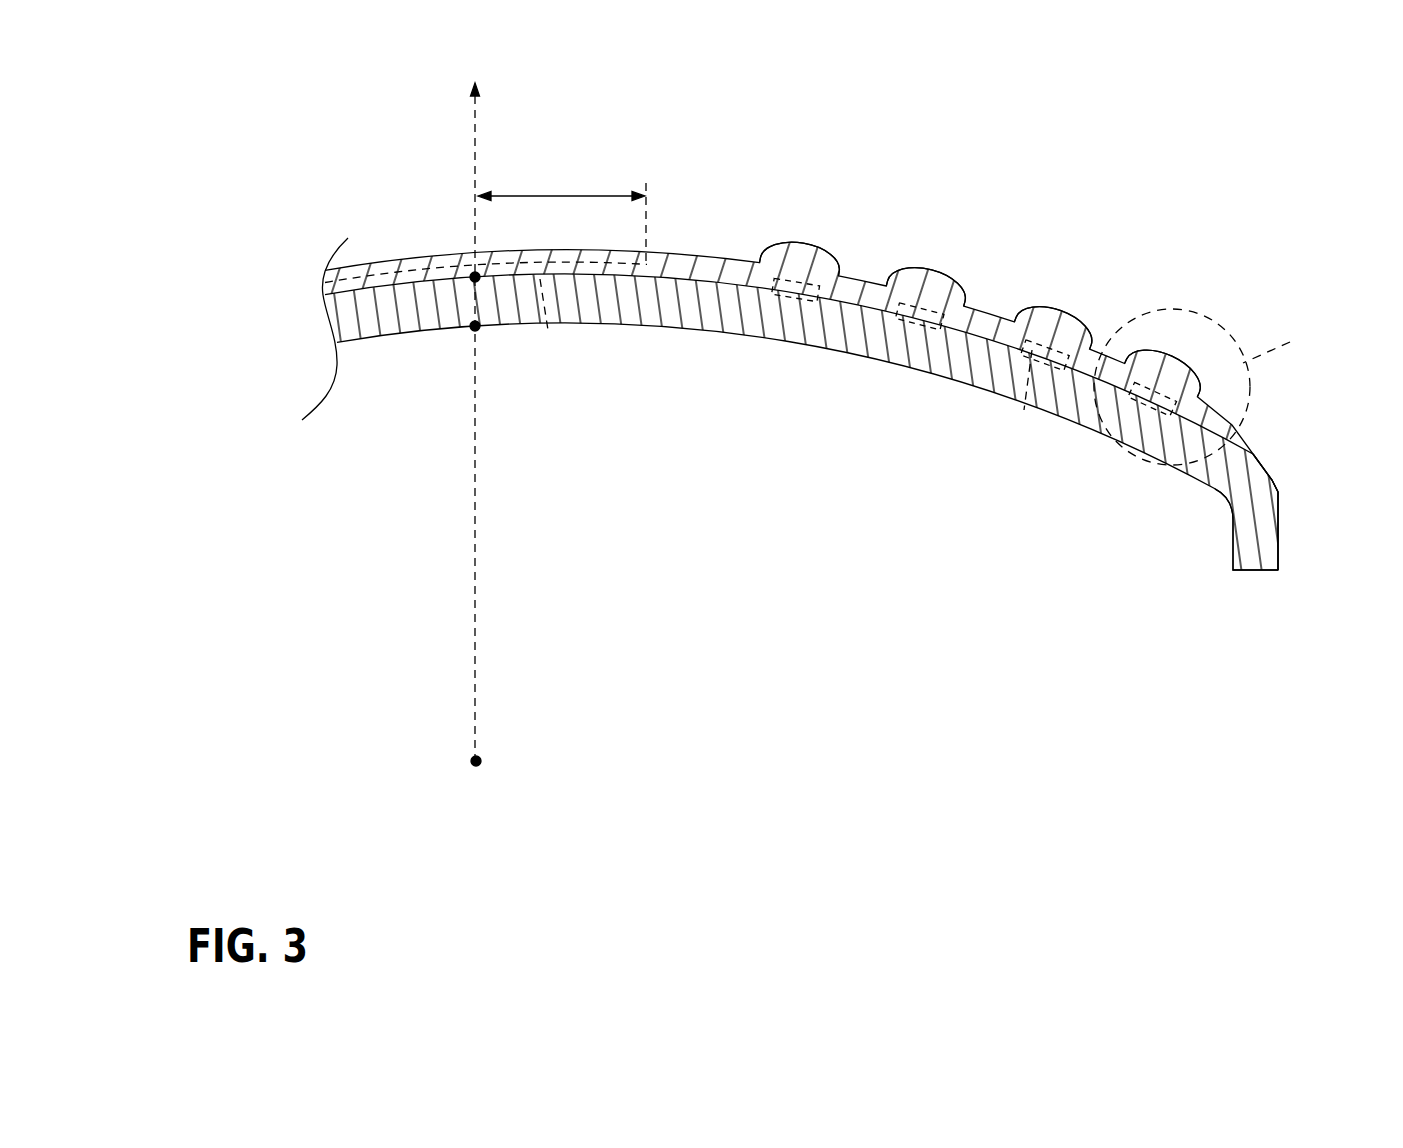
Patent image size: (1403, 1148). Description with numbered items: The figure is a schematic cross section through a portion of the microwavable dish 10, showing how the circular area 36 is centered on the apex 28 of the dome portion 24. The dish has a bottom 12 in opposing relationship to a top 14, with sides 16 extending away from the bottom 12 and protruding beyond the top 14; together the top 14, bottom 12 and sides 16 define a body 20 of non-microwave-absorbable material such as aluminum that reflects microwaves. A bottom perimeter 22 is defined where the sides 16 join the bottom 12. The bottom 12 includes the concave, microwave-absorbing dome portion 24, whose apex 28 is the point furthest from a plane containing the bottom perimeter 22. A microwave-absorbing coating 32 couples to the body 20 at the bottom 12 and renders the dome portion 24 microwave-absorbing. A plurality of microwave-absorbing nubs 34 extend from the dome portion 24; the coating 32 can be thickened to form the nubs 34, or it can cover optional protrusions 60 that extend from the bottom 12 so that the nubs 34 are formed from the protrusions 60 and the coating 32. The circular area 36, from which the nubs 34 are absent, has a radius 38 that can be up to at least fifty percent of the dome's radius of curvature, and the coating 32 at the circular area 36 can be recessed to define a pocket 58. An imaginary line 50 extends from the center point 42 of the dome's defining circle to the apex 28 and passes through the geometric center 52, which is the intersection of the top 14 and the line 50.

The microwavable dish 10 is at (844, 349).
The bottom 12 is at (844, 431).
The top 14 is at (952, 379).
The sides 16 is at (1280, 553).
The body 20 is at (1301, 538).
The bottom perimeter 22 is at (1273, 480).
The dome portion 24 is at (1006, 295).
The apex 28 is at (475, 277).
The microwave-absorbing coating 32 is at (998, 317).
The microwave-absorbing nubs 34 is at (1183, 360).
The circular area 36 is at (801, 372).
The radius 38 is at (553, 196).
The center point 42 is at (471, 762).
The imaginary line 50 is at (475, 632).
The geometric center 52 is at (475, 326).
The pocket 58 is at (548, 330).
The protrusions 60 is at (1024, 410).